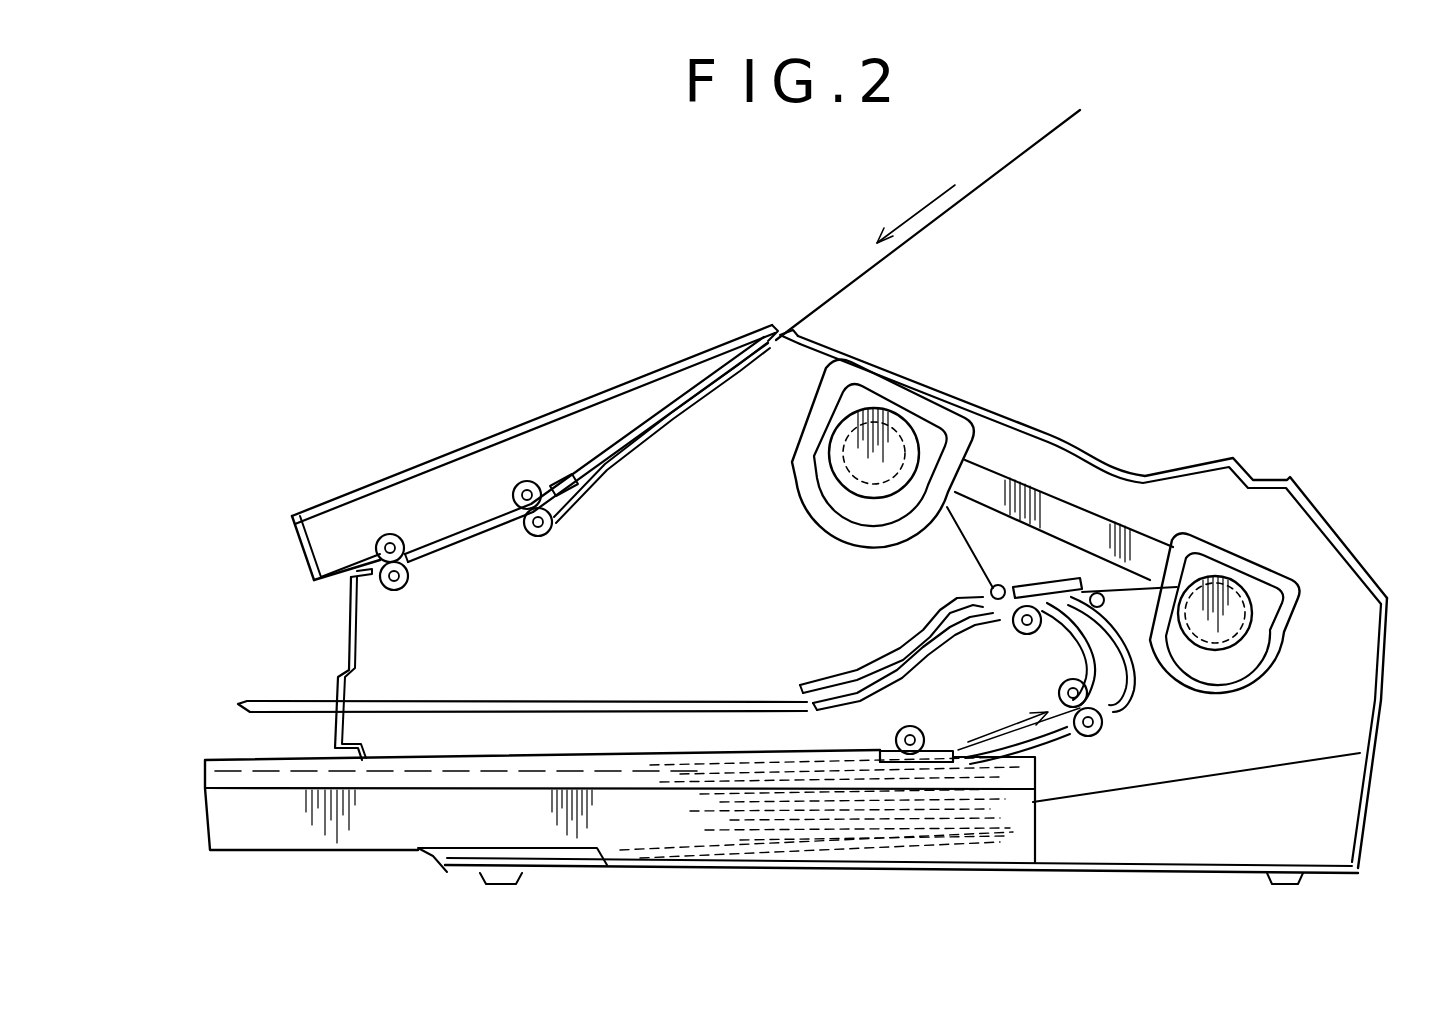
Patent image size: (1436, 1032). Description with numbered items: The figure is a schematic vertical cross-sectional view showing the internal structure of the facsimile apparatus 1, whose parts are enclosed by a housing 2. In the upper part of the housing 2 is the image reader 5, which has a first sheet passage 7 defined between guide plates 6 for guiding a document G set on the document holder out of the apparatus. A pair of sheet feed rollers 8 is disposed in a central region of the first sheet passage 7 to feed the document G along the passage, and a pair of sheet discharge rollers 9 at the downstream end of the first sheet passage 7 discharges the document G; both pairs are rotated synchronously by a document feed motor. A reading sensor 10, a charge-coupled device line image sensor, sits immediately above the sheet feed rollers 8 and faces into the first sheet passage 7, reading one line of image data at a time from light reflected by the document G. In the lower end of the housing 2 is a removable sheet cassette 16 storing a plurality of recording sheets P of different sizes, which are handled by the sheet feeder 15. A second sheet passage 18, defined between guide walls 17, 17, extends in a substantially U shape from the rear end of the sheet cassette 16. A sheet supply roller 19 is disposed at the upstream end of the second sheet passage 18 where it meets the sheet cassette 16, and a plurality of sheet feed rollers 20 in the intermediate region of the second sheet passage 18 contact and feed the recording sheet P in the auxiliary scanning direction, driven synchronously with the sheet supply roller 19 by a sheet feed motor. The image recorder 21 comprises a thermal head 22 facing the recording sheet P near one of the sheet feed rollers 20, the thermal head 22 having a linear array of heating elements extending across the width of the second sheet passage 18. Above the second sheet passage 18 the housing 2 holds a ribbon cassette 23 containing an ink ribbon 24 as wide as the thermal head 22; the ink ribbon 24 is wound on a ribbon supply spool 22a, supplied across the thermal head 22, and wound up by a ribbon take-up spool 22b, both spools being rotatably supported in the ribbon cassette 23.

The facsimile apparatus 1 is at (1122, 394).
The housing 2 is at (1362, 553).
The image reader 5 is at (503, 430).
The guide plates 6 is at (640, 450).
The first sheet passage 7 is at (608, 466).
The sheet feed rollers 8 is at (552, 530).
The sheet discharge rollers 9 is at (405, 583).
The reading sensor 10 is at (560, 470).
The sheet feeder 15 is at (1055, 772).
The sheet cassette 16 is at (297, 833).
The guide walls 17 is at (887, 662).
The second sheet passage 18 is at (1116, 692).
The sheet supply roller 19 is at (895, 740).
The sheet feed rollers 20 is at (1031, 636).
The image recorder 21 is at (952, 585).
The thermal head 22 is at (1025, 588).
The ribbon supply spool 22a is at (1245, 590).
The ribbon take-up spool 22b is at (860, 496).
The ribbon cassette 23 is at (1122, 512).
The ink ribbon 24 is at (947, 527).
The document G is at (967, 208).
The recording sheet P is at (993, 743).